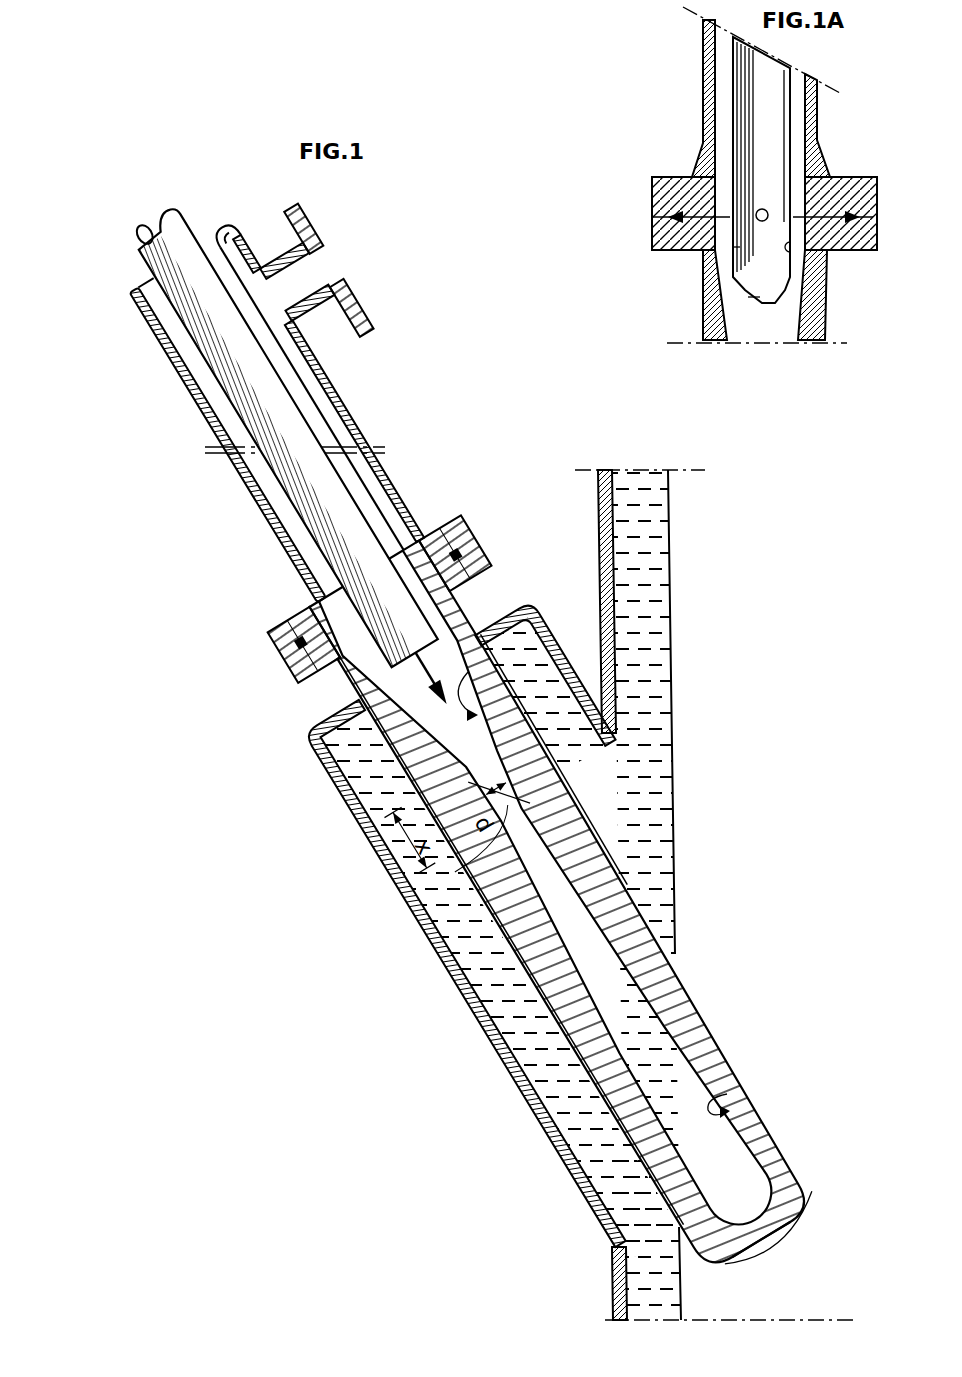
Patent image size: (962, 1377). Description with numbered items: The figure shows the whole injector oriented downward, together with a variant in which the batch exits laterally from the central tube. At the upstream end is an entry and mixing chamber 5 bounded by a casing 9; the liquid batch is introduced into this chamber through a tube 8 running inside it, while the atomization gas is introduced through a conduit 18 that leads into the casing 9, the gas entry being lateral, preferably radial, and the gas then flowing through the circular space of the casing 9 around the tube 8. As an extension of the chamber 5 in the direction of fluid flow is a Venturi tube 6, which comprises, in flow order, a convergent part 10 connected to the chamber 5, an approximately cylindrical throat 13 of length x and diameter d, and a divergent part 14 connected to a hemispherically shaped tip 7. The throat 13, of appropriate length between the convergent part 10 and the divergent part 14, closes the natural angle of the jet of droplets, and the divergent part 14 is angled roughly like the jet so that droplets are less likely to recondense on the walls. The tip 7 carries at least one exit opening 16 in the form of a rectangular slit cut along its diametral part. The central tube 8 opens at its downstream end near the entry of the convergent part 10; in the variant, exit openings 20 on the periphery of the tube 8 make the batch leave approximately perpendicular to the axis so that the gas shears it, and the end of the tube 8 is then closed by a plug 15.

In FIG. 1, the entry and mixing chamber 5 is at (235, 236).
In FIG. 1, the Venturi tube 6 is at (694, 978).
In FIG. 1, the tip 7 is at (792, 1192).
In FIG. 1, the tube 8 is at (78, 103).
In FIG. 1A, the tube 8 is at (740, 87).
In FIG. 1, the casing 9 is at (173, 367).
In FIG. 1, the convergent part 10 is at (532, 612).
In FIG. 1, the throat 13 is at (412, 898).
In FIG. 1, the divergent part 14 is at (713, 1100).
In FIG. 1A, the plug 15 is at (752, 296).
In FIG. 1, the exit opening 16 is at (770, 1250).
In FIG. 1, the conduit 18 is at (330, 292).
In FIG. 1A, the exit openings 20 is at (737, 247).